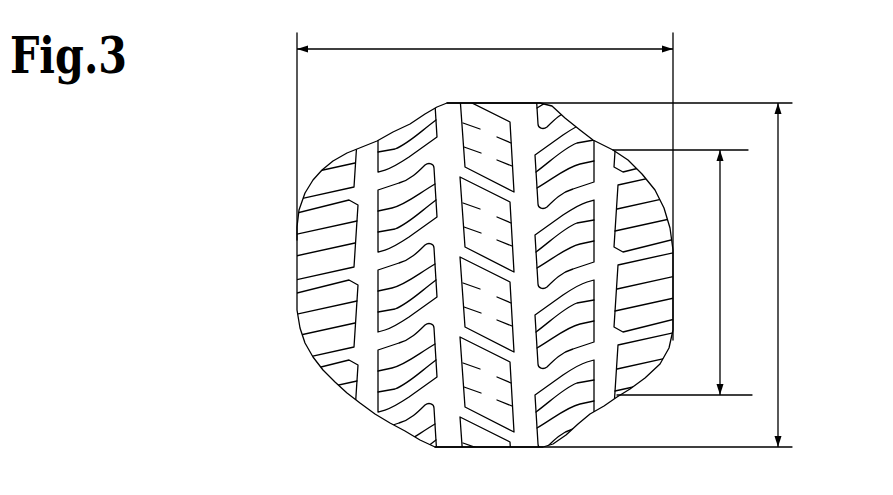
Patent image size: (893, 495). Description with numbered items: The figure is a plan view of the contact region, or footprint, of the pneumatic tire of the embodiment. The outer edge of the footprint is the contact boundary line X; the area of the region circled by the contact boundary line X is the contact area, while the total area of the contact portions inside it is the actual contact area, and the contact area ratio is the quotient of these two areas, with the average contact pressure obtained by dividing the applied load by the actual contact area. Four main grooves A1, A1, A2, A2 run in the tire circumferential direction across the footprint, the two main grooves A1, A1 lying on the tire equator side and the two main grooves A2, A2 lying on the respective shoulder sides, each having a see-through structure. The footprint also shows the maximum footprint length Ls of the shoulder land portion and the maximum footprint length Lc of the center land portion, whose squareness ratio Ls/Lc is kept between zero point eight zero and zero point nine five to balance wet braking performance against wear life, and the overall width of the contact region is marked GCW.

The contact boundary line X is at (345, 153).
The main groove A1 is at (450, 120).
The main groove A2 is at (366, 152).
The ground contact width GCW is at (485, 179).
The maximum footprint length of the shoulder land portion Ls is at (682, 272).
The maximum footprint length of the center land portion Lc is at (621, 275).